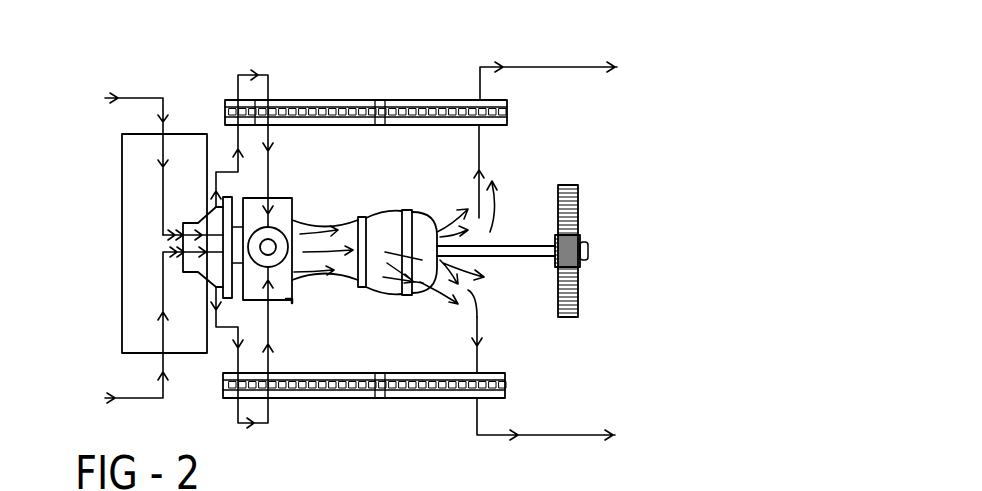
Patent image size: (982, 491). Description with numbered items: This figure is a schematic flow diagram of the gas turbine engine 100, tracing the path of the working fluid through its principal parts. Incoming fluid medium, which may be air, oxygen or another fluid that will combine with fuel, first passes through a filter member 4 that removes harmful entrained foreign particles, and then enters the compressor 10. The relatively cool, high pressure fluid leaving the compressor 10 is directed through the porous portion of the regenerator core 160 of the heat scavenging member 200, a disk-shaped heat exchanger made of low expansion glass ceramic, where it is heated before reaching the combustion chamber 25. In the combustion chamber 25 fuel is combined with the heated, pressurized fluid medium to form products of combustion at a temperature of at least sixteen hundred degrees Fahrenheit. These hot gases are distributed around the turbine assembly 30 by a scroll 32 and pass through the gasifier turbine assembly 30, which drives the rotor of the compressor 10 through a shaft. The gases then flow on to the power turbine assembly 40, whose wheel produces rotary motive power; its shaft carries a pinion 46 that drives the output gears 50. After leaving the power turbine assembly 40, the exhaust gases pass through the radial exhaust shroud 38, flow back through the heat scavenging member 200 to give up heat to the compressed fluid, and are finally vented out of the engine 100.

The gas turbine engine 100 is at (126, 67).
The filter member 4 is at (127, 226).
The compressor 10 is at (190, 294).
The heat scavenging member 200 is at (304, 94).
The regenerator core 160 is at (385, 100).
The combustion chamber 25 is at (270, 225).
The scroll 32 is at (292, 300).
The turbine assembly 30 is at (344, 210).
The power turbine assembly 40 is at (408, 204).
The radial exhaust shroud 38 is at (432, 217).
The pinion 46 is at (580, 265).
The output gears 50 is at (578, 202).